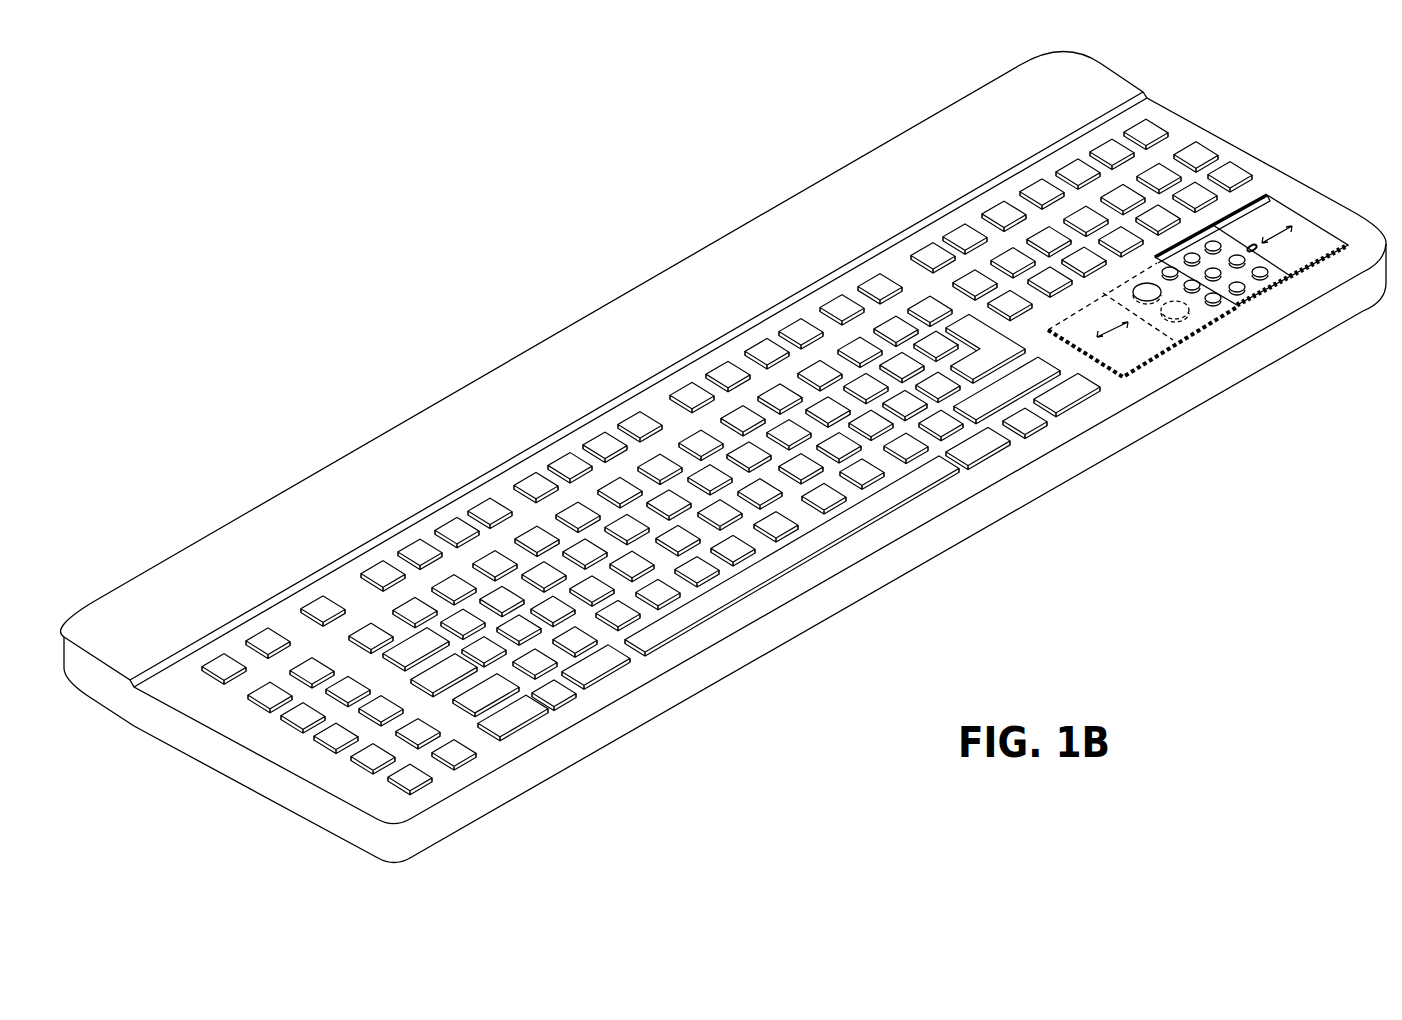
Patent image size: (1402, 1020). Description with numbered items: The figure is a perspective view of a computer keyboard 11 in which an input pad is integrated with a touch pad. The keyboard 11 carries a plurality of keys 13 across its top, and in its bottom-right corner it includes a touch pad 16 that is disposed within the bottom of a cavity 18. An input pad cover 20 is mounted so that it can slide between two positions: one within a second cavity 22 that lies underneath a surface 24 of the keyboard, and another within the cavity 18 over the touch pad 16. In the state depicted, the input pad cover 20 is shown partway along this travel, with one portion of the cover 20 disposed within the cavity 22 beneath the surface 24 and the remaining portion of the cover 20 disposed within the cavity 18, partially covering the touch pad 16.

The keyboard 11 is at (550, 242).
The keys 13 is at (867, 470).
The touch pad 16 is at (1313, 238).
The cavity 18 is at (1273, 203).
The input pad cover 20 is at (1253, 283).
The cavity 22 is at (1177, 328).
The surface 24 is at (1115, 393).